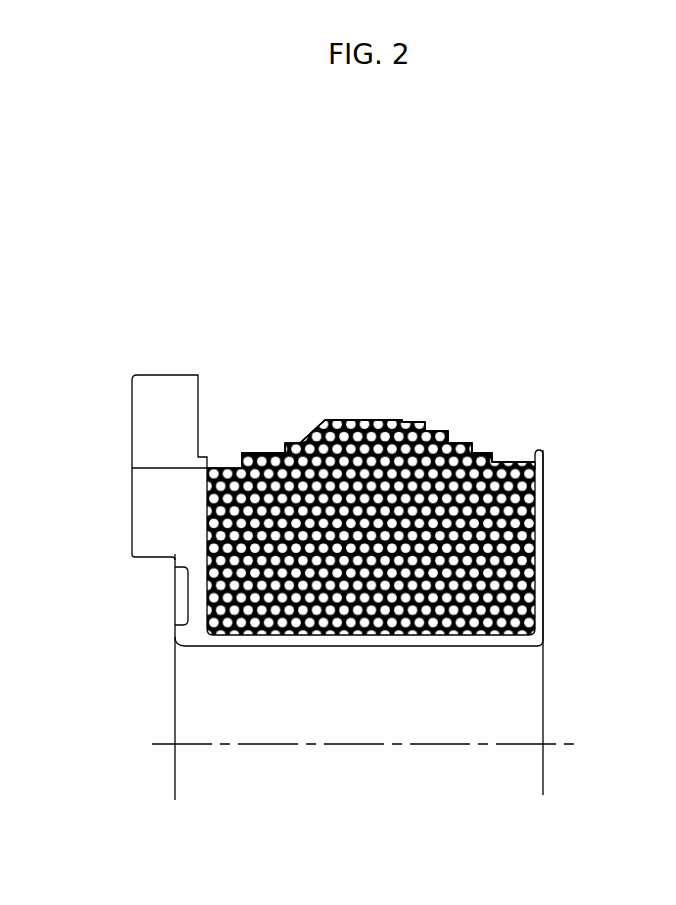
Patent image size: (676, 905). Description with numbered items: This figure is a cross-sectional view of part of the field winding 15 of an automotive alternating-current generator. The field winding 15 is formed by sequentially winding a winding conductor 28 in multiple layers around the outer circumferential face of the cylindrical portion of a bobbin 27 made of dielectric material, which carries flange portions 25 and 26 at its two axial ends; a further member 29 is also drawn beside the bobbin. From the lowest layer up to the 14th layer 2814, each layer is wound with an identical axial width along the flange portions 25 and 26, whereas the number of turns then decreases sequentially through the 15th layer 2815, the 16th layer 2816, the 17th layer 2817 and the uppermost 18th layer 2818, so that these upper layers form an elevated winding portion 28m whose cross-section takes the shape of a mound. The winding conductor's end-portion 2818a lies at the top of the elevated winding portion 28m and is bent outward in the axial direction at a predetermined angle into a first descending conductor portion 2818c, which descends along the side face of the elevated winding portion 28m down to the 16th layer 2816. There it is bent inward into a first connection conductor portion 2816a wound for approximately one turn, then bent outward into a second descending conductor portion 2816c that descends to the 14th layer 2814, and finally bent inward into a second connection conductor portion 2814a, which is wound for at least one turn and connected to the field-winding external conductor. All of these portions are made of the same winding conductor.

The field winding 15 is at (345, 298).
The flange portion 25 is at (540, 528).
The flange portion 26 is at (177, 605).
The bobbin 27 is at (467, 645).
The winding conductor 28 is at (520, 583).
The elevated winding portion 28m is at (566, 267).
The cover member 29 is at (148, 397).
The 14th layer 2814 is at (513, 465).
The second connection conductor portion 2814a is at (133, 470).
The 15th layer 2815 is at (482, 454).
The 16th layer 2816 is at (455, 444).
The first connection conductor portion 2816a is at (283, 452).
The second descending conductor portion 2816c is at (268, 453).
The 17th layer 2817 is at (432, 437).
The 18th layer 2818 is at (420, 419).
The winding conductor's end-portion 2818a is at (352, 418).
The first descending conductor portion 2818c is at (325, 423).